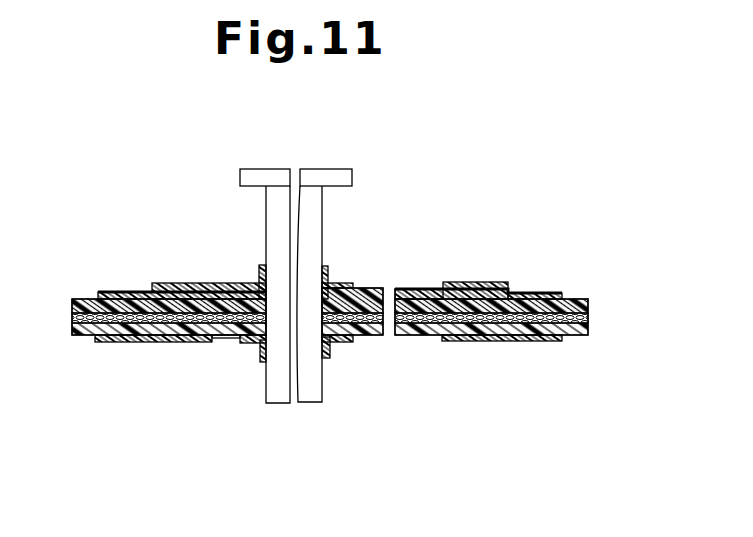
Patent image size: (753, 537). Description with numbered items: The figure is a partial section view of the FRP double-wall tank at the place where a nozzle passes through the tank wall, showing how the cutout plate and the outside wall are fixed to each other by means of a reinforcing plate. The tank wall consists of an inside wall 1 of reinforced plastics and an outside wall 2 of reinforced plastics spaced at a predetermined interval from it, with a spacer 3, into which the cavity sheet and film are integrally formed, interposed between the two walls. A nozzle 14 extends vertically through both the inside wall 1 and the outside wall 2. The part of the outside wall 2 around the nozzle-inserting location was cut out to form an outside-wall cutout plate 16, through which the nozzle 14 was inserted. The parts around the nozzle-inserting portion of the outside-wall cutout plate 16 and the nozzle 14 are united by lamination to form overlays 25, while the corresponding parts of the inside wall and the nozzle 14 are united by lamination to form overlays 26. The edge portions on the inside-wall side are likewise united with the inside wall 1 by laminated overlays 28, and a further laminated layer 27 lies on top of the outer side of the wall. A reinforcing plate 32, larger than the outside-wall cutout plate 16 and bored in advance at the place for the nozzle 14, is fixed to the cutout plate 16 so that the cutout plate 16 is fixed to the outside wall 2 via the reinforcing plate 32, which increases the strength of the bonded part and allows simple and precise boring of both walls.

The inside wall 1 is at (575, 330).
The outside wall 2 is at (588, 302).
The spacer 3 is at (588, 317).
The nozzle 14 is at (268, 178).
The outside-wall cutout plate 16 is at (413, 305).
The overlay 25 is at (258, 286).
The overlay 26 is at (260, 350).
The upper conductive layer 27 is at (166, 284).
The overlay 28 is at (170, 343).
The reinforcing plate 32 is at (418, 289).